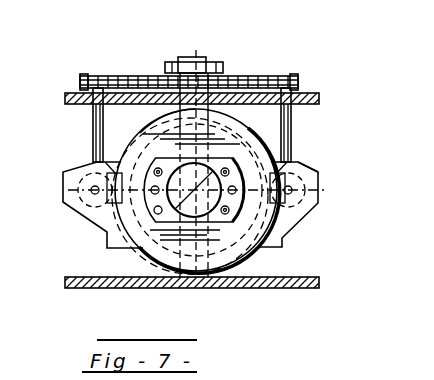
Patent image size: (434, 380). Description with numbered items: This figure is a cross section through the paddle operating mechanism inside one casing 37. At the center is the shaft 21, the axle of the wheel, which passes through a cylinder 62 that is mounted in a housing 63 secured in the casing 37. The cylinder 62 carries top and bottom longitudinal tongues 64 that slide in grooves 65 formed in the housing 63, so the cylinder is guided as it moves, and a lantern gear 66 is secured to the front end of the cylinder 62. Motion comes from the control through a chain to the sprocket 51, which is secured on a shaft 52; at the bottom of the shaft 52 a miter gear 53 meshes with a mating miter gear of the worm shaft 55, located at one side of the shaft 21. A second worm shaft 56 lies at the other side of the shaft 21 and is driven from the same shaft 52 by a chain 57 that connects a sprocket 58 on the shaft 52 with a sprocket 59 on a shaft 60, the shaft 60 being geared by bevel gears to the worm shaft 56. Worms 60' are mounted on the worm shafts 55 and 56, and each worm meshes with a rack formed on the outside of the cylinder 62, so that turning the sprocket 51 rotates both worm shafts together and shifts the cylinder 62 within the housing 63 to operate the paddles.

The shaft 21 is at (174, 205).
The casing 37 is at (315, 93).
The sprocket 51 is at (218, 58).
The shaft 52 is at (293, 116).
The miter gear 53 is at (302, 169).
The worm shaft 55 is at (292, 192).
The worm shaft 56 is at (92, 191).
The chain 57 is at (128, 76).
The sprocket 58 is at (283, 76).
The sprocket 59 is at (90, 76).
The shaft 60 is at (65, 121).
The worm 60' is at (202, 174).
The cylinder 62 is at (288, 239).
The housing 63 is at (127, 143).
The tongue 64 is at (178, 266).
The groove 65 is at (182, 119).
The lantern gear 66 is at (232, 172).